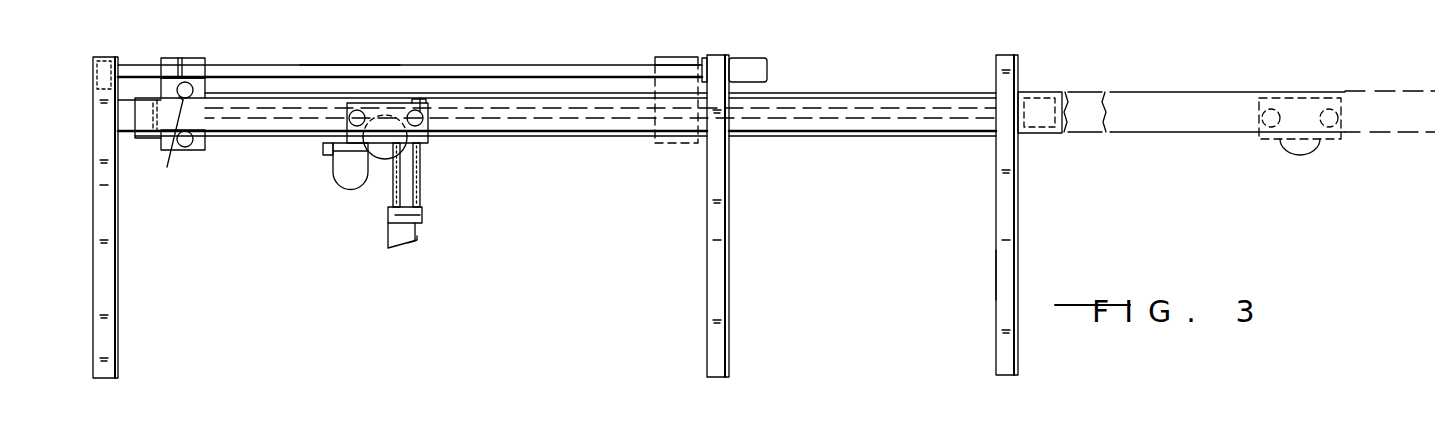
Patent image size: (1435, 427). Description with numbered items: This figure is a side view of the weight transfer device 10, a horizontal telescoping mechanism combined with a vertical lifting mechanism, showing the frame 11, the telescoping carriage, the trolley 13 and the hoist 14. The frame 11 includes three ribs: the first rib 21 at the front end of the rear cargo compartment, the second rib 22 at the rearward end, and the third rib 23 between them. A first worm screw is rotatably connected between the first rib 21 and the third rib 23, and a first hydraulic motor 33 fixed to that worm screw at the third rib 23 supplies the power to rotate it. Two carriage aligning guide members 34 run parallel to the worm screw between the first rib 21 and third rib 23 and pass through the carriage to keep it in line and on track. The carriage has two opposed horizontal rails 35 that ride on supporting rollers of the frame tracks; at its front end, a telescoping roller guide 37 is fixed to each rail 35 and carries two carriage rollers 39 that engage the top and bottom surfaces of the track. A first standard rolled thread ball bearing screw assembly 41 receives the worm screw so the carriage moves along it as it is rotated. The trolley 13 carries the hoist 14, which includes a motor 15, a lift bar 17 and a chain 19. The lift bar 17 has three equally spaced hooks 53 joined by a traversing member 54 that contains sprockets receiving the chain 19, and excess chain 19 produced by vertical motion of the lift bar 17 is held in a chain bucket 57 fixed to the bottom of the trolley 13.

The weight transfer device 10 is at (616, 58).
The frame 11 is at (1018, 185).
The trolley 13 is at (405, 93).
The hoist 14 is at (432, 143).
The motor 15 is at (139, 69).
The lift bar 17 is at (422, 207).
The chain 19 is at (393, 185).
The first rib 21 is at (120, 247).
The second rib 22 is at (1003, 55).
The third rib 23 is at (718, 55).
The first hydraulic motor 33 is at (767, 63).
The carriage aligning guide member 34 is at (553, 45).
The rail 35 is at (202, 49).
The telescoping roller guide 37 is at (205, 150).
The carriage roller 39 is at (160, 150).
The first standard rolled thread ball bearing screw assembly 41 is at (205, 62).
The hook 53 is at (393, 248).
The traversing member 54 is at (415, 215).
The chain bucket 57 is at (328, 183).